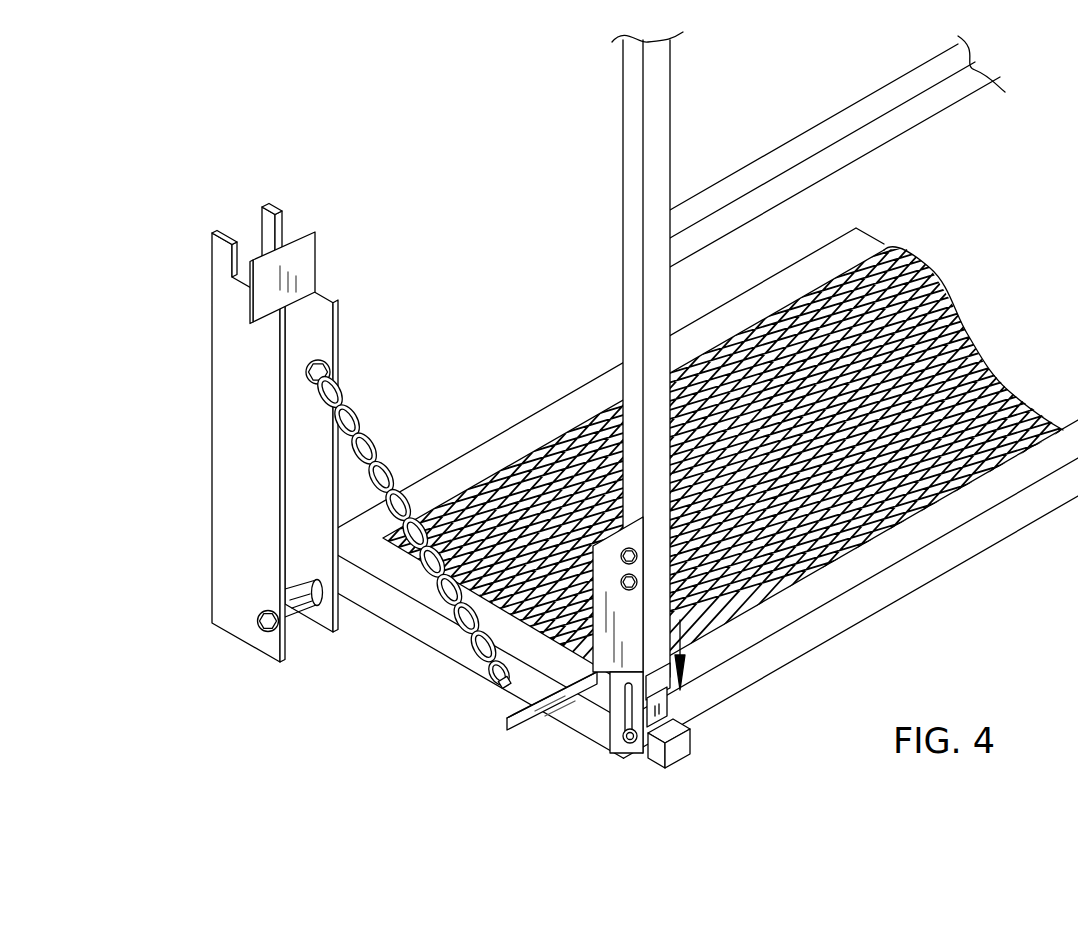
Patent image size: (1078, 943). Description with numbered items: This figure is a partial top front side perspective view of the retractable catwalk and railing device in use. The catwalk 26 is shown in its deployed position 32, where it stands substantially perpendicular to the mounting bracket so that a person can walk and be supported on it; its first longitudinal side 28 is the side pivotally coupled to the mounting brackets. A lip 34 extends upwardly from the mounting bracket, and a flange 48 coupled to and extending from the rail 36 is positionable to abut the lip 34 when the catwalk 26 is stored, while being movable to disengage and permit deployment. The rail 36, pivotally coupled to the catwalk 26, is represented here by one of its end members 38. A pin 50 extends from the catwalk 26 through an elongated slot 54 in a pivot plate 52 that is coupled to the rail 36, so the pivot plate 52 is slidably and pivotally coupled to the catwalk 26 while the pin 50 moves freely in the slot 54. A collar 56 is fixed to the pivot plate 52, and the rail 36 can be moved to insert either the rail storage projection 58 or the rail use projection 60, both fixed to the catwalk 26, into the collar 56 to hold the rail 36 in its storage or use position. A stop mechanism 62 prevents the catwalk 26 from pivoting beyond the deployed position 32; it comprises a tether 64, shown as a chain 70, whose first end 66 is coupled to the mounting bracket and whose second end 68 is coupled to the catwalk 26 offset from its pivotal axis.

The catwalk 26 is at (940, 515).
The first longitudinal side 28 is at (573, 405).
The deployed position 32 is at (327, 471).
The lip 34 is at (298, 240).
The rail 36 is at (684, 74).
The end members 38 is at (632, 152).
The flange 48 is at (507, 735).
The pin 50 is at (613, 755).
The pivot plate 52 is at (602, 668).
The elongated slot 54 is at (625, 705).
The collar 56 is at (667, 712).
The rail storage projection 58 is at (668, 758).
The rail use projection 60 is at (655, 713).
The stop mechanism 62 is at (414, 571).
The tether 64 is at (232, 460).
The first end 66 is at (325, 362).
The second end 68 is at (496, 690).
The chain 70 is at (383, 435).